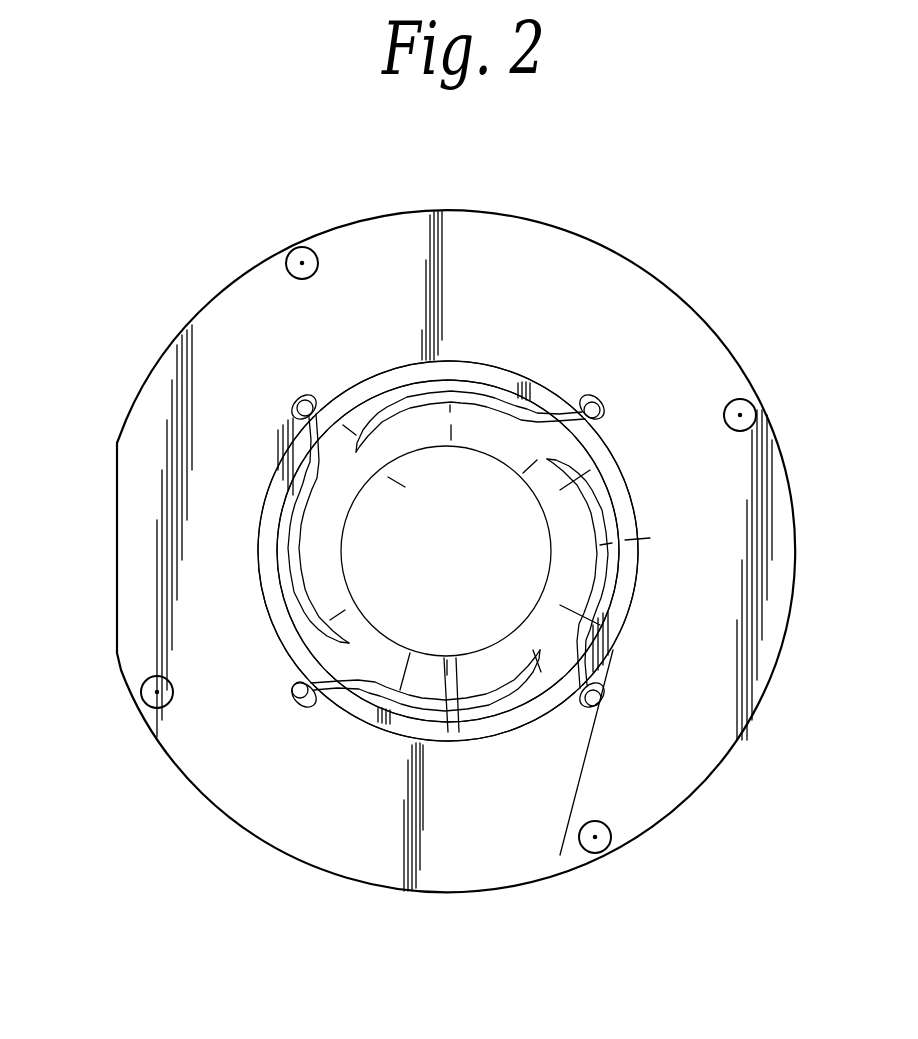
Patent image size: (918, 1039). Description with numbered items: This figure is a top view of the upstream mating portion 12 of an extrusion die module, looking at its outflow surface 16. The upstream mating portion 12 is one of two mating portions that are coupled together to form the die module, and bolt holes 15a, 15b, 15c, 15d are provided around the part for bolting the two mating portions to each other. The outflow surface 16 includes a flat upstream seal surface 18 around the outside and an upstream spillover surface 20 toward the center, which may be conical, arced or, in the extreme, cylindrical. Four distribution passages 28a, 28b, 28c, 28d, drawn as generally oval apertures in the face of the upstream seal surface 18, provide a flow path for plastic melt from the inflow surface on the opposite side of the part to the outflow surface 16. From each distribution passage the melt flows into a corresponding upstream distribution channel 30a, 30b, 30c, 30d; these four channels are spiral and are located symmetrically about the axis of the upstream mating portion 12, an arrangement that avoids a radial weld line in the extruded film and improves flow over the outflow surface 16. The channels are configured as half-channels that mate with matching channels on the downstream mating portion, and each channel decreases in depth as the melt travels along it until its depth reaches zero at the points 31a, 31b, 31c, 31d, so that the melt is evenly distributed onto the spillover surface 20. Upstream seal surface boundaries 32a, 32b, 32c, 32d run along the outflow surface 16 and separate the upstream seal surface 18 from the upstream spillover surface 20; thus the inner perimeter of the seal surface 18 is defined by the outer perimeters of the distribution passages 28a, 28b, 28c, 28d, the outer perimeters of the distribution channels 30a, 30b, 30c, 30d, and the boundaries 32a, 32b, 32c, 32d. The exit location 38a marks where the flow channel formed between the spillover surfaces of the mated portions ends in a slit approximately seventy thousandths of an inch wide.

The upstream mating portion 12 is at (131, 315).
The bolt hole 15a is at (157, 692).
The bolt hole 15b is at (595, 837).
The bolt hole 15c is at (741, 414).
The bolt hole 15d is at (302, 263).
The outflow surface 16 is at (583, 300).
The upstream seal surface 18 is at (560, 855).
The upstream spillover surface 20 is at (562, 535).
The distribution passage 28a is at (299, 692).
The distribution passage 28b is at (595, 702).
The distribution passage 28c is at (594, 405).
The distribution passage 28d is at (303, 405).
The upstream distribution channel 30a is at (355, 727).
The upstream distribution channel 30b is at (616, 658).
The upstream distribution channel 30c is at (489, 375).
The upstream distribution channel 30d is at (268, 584).
The point 31a is at (548, 460).
The point 31b is at (357, 455).
The point 31c is at (348, 646).
The point 31d is at (543, 649).
The upstream seal surface boundary 32a is at (310, 684).
The upstream seal surface boundary 32b is at (582, 698).
The upstream seal surface boundary 32c is at (592, 402).
The upstream seal surface boundary 32d is at (318, 423).
The exit location 38a is at (448, 734).